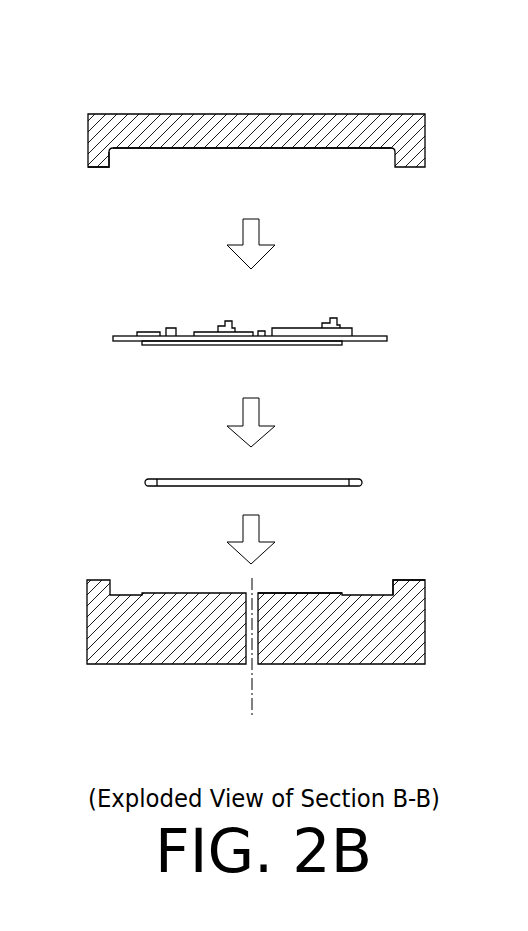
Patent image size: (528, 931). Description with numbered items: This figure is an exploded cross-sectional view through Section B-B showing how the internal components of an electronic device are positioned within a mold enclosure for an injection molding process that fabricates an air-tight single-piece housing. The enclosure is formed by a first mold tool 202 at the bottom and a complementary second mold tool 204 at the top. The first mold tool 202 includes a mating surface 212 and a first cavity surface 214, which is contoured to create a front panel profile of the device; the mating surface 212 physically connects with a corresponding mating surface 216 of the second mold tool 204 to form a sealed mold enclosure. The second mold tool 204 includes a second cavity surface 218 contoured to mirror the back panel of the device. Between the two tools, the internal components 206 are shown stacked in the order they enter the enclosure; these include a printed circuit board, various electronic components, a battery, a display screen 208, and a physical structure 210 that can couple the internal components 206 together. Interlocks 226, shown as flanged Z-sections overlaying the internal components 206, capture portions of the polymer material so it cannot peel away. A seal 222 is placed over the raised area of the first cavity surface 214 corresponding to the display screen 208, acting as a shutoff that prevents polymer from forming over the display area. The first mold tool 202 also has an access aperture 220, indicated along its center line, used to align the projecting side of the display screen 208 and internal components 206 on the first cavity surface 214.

The first mold tool 202 is at (345, 664).
The second mold tool 204 is at (380, 114).
The internal components 206 is at (240, 332).
The display screen 208 is at (297, 343).
The physical structure 210 is at (377, 336).
The mating surface 212 is at (410, 582).
The first cavity surface 214 is at (310, 593).
The mating surface 216 is at (102, 166).
The second cavity surface 218 is at (255, 148).
The access aperture 220 is at (252, 683).
The seal 222 is at (193, 480).
The interlocks 226 is at (338, 320).